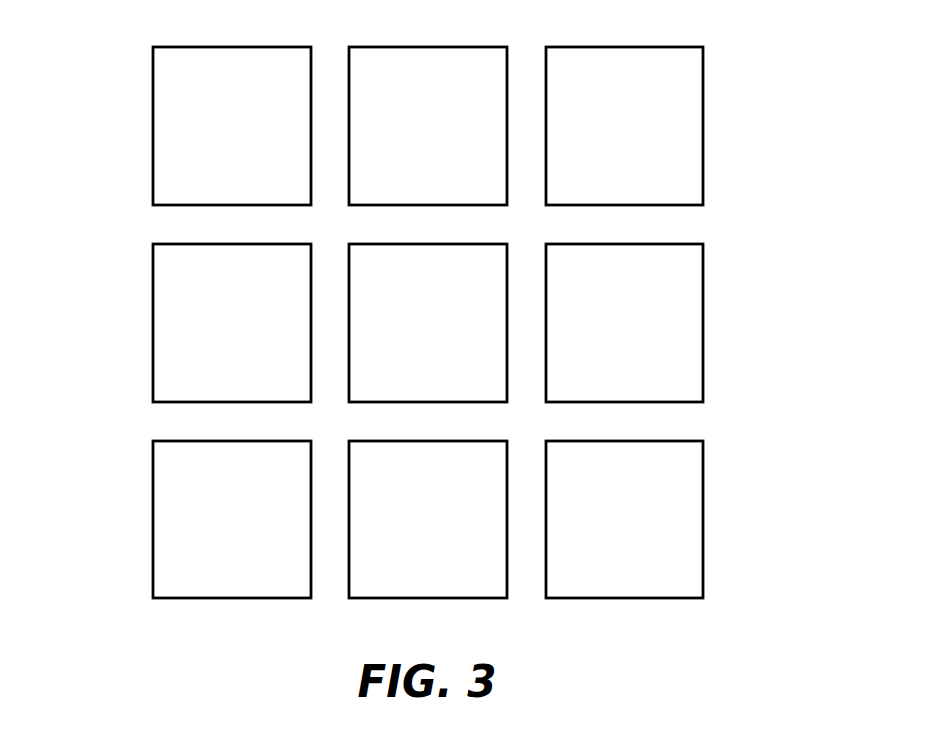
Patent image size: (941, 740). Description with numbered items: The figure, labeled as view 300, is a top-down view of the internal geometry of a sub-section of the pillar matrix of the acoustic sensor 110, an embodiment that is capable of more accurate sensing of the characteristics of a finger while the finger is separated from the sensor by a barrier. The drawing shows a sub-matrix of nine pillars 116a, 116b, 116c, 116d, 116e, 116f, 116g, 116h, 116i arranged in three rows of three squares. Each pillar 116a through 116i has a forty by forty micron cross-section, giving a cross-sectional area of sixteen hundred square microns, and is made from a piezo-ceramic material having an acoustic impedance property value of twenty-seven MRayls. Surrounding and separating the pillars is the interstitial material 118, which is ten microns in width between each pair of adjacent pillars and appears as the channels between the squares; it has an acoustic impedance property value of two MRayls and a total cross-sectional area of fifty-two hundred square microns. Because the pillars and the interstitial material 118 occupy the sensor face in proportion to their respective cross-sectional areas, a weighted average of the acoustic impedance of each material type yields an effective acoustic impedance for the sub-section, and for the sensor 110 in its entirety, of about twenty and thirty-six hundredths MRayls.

The panel arrangement 300 is at (874, 75).
The acoustic sensor 110 is at (442, 336).
The pillar 116a is at (205, 140).
The pillar 116b is at (401, 140).
The pillar 116c is at (598, 140).
The pillar 116d is at (205, 337).
The pillar 116e is at (401, 337).
The pillar 116f is at (599, 337).
The pillar 116g is at (205, 533).
The pillar 116h is at (401, 533).
The pillar 116i is at (648, 533).
The interstitial material 118 is at (177, 229).